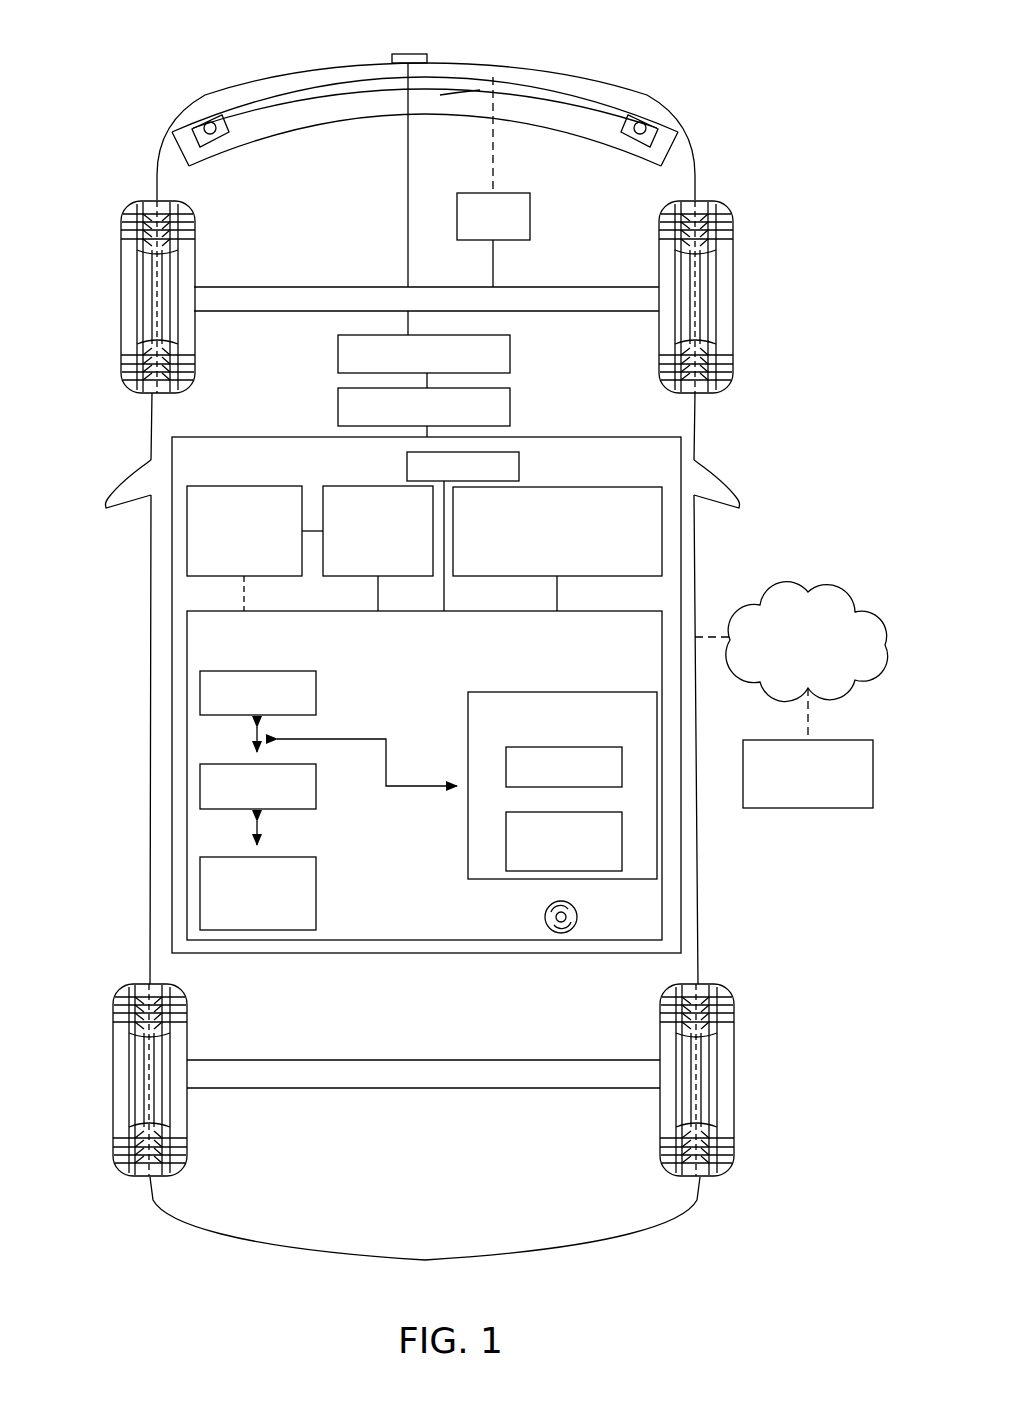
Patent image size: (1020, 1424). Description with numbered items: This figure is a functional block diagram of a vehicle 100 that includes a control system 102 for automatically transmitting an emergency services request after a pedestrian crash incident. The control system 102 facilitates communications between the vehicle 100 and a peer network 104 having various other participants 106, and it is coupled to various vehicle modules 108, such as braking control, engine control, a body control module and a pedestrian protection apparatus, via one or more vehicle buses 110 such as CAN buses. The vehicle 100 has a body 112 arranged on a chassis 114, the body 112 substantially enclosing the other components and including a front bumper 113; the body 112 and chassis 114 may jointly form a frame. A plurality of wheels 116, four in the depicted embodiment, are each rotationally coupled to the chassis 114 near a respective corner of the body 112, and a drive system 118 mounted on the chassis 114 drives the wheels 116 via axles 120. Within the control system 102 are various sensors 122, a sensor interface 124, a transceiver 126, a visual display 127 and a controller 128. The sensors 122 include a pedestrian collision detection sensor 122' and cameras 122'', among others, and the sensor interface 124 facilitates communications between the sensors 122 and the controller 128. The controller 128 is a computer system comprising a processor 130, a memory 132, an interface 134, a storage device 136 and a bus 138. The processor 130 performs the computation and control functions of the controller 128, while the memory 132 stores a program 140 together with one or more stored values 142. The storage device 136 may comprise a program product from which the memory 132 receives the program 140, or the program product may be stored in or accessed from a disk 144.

The vehicle 100 is at (692, 82).
The control system 102 is at (237, 437).
The peer network 104 is at (809, 590).
The participants 106 is at (815, 808).
The vehicle modules 108 is at (511, 353).
The vehicle buses 110 is at (511, 406).
The body 112 is at (152, 418).
The front bumper 113 is at (270, 80).
The chassis 114 is at (490, 178).
The wheels 116 is at (119, 298).
The drive system 118 is at (530, 216).
The axles 120 is at (250, 286).
The sensors 122 is at (255, 506).
The pedestrian collision detection sensor 122' is at (463, 56).
The cameras 122'' is at (378, 147).
The sensor interface 124 is at (352, 486).
The transceiver 126 is at (610, 487).
The visual display 127 is at (520, 472).
The controller 128 is at (187, 642).
The processor 130 is at (316, 693).
The memory 132 is at (468, 713).
The interface 134 is at (316, 790).
The storage device 136 is at (316, 897).
The bus 138 is at (262, 739).
The program 140 is at (506, 766).
The stored values 142 is at (506, 843).
The disk 144 is at (544, 916).